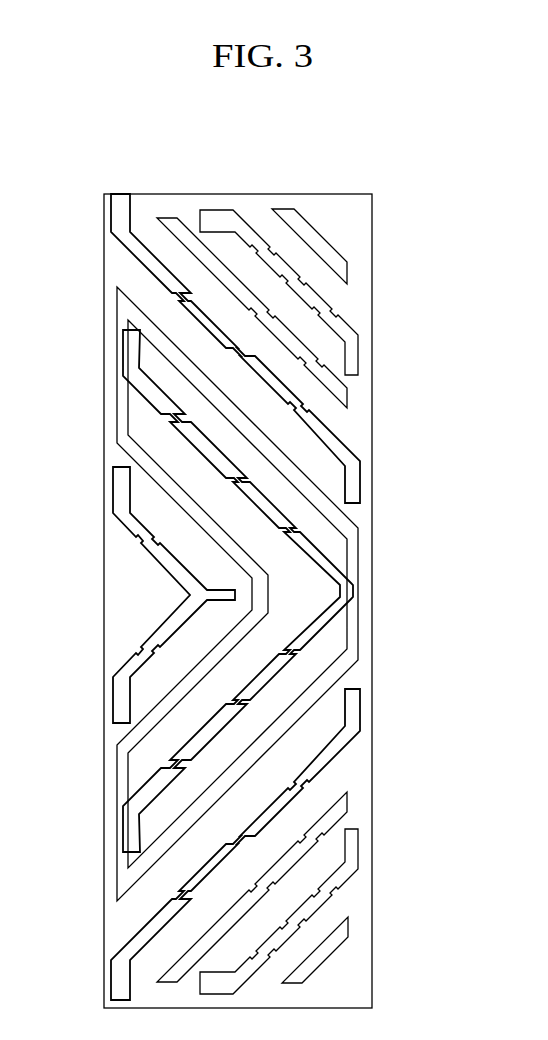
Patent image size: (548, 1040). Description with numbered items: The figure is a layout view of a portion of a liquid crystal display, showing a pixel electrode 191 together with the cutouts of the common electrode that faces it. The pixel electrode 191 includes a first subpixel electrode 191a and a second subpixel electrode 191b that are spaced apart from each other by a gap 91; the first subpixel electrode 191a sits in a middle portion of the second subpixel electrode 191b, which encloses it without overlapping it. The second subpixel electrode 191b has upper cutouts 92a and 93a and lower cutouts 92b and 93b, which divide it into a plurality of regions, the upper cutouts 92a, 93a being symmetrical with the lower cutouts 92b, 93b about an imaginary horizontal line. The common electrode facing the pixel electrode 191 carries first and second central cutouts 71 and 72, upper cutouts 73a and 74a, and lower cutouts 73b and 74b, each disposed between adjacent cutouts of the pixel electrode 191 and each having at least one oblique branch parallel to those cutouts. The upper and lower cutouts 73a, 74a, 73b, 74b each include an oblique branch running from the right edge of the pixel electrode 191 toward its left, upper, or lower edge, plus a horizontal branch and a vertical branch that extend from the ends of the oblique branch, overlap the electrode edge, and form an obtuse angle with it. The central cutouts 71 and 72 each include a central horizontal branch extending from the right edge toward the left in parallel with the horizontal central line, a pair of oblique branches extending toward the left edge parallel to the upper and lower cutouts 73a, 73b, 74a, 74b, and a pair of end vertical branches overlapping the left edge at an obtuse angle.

The first central cutout 71 is at (147, 645).
The second central cutout 72 is at (157, 778).
The upper cutout 73a is at (283, 380).
The lower cutout 73b is at (348, 768).
The upper cutout 74a is at (325, 303).
The lower cutout 74b is at (345, 893).
The gap 91 is at (270, 437).
The upper cutout 92a is at (300, 343).
The lower cutout 92b is at (348, 802).
The upper cutout 93a is at (323, 238).
The lower cutout 93b is at (348, 927).
The pixel electrode 191 is at (315, 601).
The first subpixel electrode 191a is at (322, 483).
The second subpixel electrode 191b is at (371, 531).